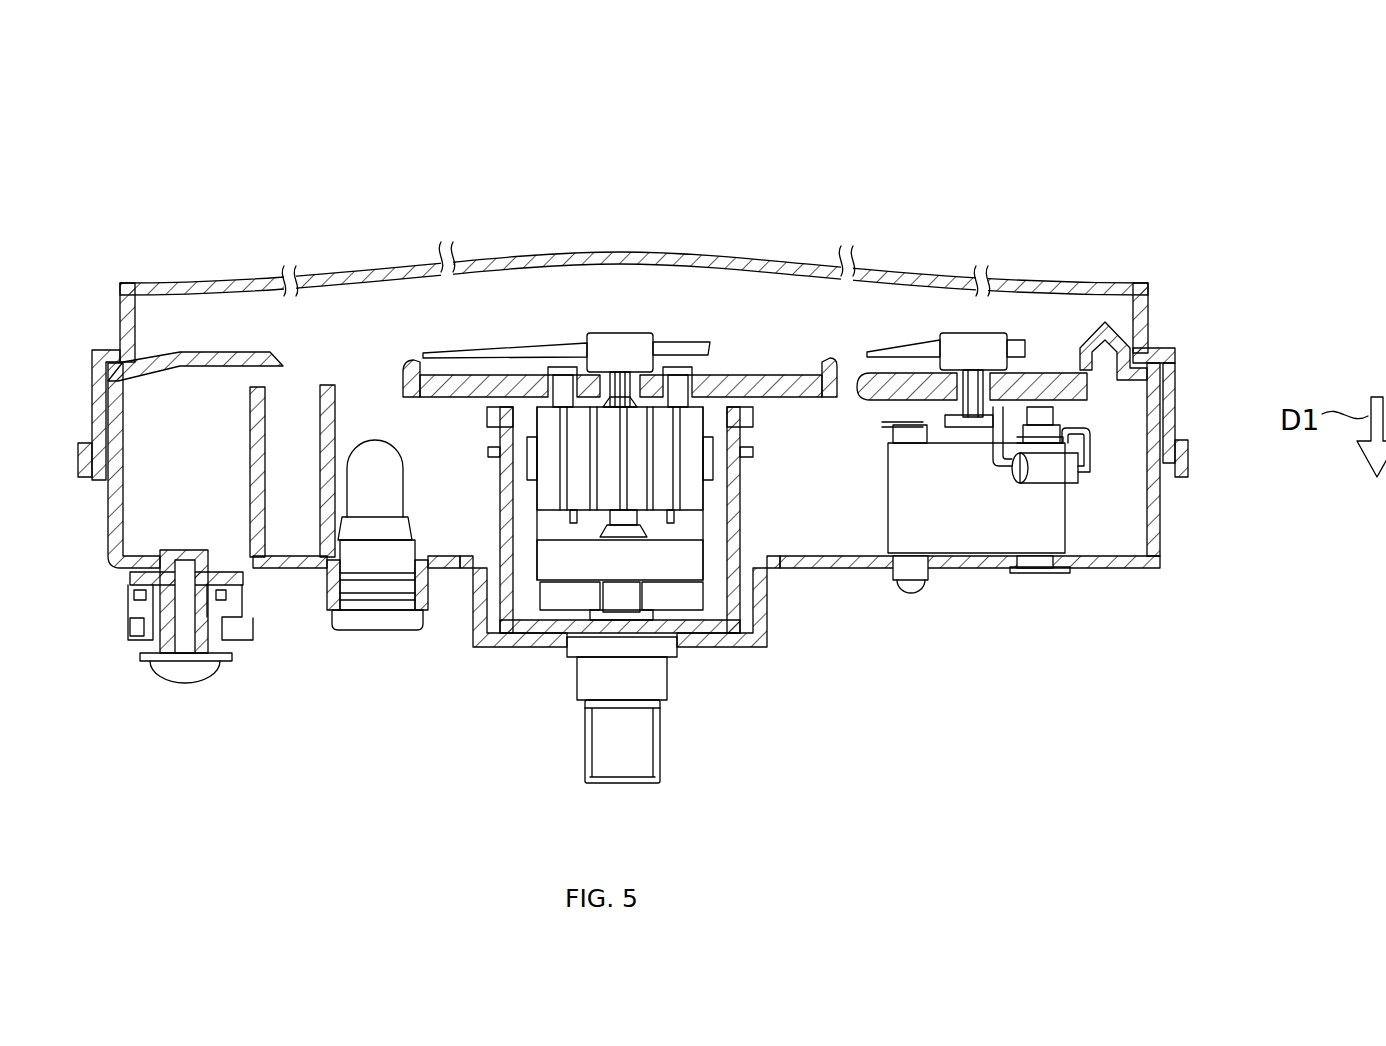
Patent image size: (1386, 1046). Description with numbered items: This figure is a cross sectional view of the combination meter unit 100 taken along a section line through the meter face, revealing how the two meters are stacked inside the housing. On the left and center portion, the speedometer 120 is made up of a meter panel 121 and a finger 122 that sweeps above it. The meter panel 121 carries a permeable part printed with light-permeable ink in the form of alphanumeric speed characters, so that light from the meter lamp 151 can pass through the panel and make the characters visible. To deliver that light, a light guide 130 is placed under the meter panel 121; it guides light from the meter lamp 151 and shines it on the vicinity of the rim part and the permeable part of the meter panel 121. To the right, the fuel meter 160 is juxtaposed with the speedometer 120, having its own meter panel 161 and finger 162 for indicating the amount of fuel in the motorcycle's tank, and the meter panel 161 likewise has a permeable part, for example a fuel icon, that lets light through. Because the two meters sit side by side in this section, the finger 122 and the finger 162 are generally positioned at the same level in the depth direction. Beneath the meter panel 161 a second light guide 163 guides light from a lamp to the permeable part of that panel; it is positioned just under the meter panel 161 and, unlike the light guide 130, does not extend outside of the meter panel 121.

The combination meter unit 100 is at (1166, 167).
The speedometer 120 is at (722, 642).
The meter panel 121 is at (735, 378).
The finger 122 is at (535, 357).
The light guide 130 is at (798, 375).
The meter lamp 151 is at (376, 460).
The fuel meter 160 is at (1097, 424).
The meter panel 161 is at (1040, 375).
The finger 162 is at (923, 350).
The light guide 163 is at (1070, 368).